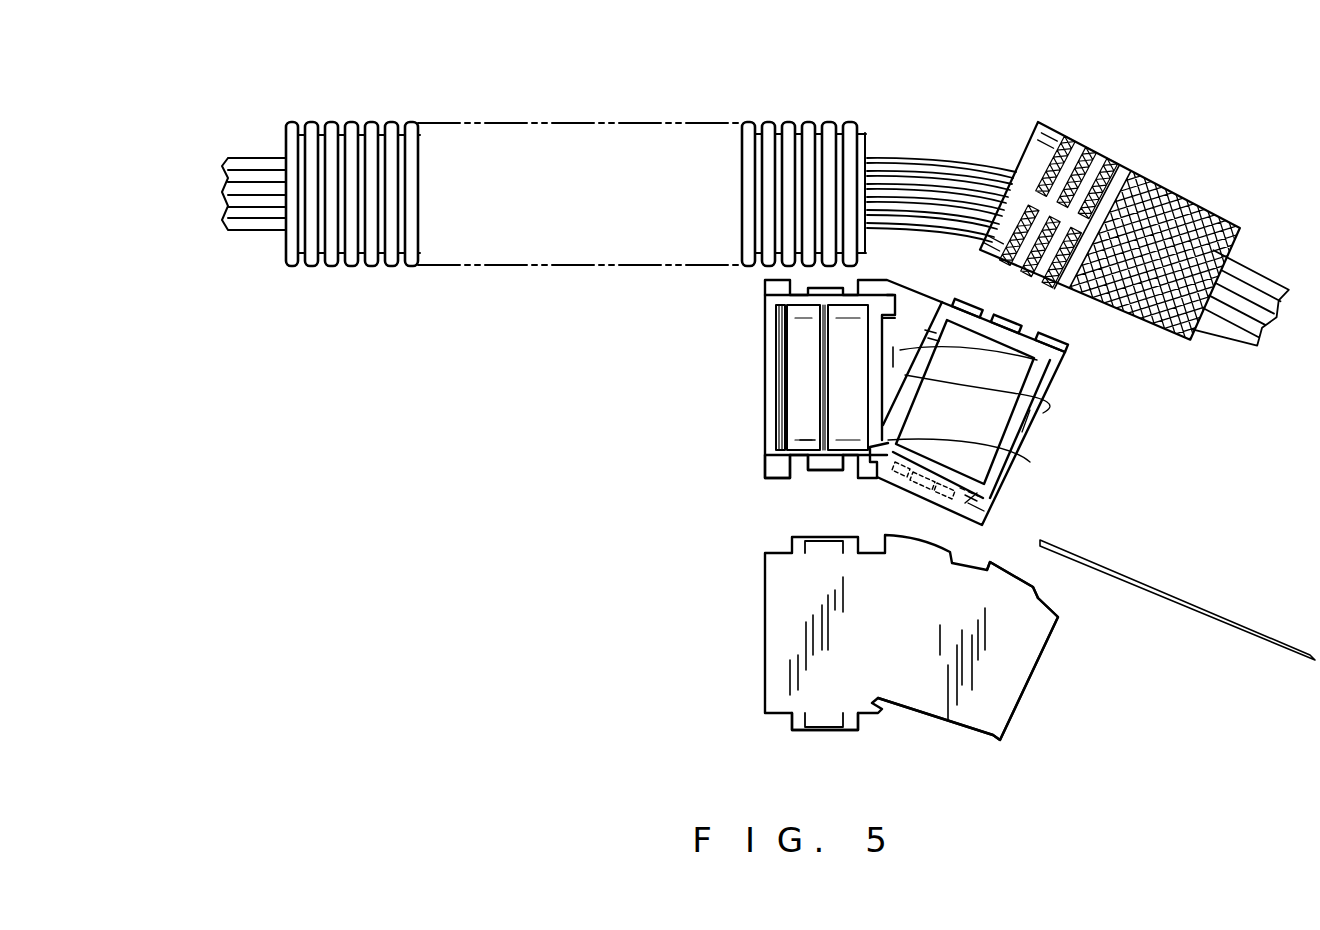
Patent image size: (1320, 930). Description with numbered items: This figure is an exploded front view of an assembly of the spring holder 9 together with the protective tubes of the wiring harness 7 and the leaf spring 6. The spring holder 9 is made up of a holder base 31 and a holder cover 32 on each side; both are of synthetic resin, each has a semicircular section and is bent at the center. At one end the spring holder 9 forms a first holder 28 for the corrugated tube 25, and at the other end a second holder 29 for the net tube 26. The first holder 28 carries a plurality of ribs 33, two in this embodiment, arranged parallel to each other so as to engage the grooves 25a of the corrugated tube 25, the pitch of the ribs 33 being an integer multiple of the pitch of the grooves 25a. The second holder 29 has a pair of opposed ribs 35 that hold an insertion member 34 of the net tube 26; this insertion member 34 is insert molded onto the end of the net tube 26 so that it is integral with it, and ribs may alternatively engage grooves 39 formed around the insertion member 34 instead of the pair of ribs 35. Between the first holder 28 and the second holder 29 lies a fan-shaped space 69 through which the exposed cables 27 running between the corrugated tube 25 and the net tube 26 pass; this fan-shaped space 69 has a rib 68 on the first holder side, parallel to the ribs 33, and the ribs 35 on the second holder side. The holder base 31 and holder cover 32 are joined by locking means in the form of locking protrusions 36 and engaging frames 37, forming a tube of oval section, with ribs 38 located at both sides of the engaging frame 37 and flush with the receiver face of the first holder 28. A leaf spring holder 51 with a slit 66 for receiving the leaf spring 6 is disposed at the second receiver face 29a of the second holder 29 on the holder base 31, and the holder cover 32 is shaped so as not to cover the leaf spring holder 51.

The leaf spring 6 is at (1165, 592).
The wiring harness 7 is at (989, 120).
The spring holder 9 is at (668, 417).
The corrugated tube 25 is at (786, 124).
The grooves 25a is at (815, 124).
The net tube 26 is at (1206, 205).
The exposed cables 27 is at (927, 155).
The first holder 28 is at (818, 592).
The second holder 29 is at (960, 468).
The second receiver face 29a is at (1008, 522).
The holder base 31 is at (757, 421).
The holder cover 32 is at (757, 583).
The ribs 33 is at (783, 352).
The insertion member 34 is at (1058, 128).
The ribs 35 is at (1020, 422).
The locking protrusions 36 is at (828, 470).
The engaging frames 37 is at (797, 725).
The ribs 38 is at (772, 470).
The grooves 39 is at (1113, 155).
The leaf spring holder 51 is at (997, 500).
The slit 66 is at (1003, 490).
The rib 68 is at (882, 325).
The fan-shaped space 69 is at (1037, 358).